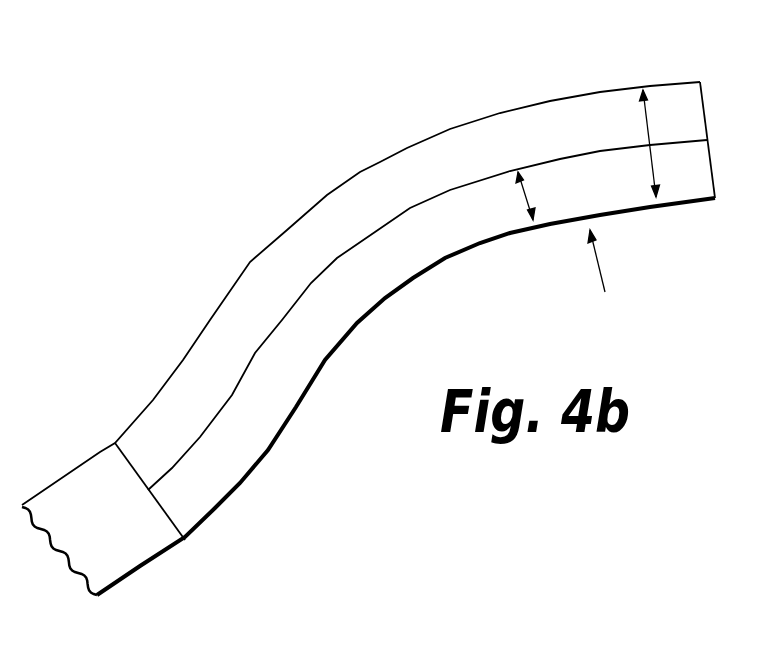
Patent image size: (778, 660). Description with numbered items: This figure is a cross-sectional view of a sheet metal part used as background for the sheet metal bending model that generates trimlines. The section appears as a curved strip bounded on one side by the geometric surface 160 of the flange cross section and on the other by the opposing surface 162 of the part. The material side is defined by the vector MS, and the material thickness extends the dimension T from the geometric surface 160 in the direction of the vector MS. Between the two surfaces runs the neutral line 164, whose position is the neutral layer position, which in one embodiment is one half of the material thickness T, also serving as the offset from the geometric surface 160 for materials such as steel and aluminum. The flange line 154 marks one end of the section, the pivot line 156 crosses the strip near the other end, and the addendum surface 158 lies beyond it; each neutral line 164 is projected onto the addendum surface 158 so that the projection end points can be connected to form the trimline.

The flange line 154 is at (708, 110).
The pivot line 156 is at (172, 512).
The addendum surface 158 is at (93, 483).
The geometric surface 160 is at (242, 483).
The opposing surface 162 is at (183, 357).
The neutral line 164 is at (172, 468).
The material thickness T is at (638, 118).
The material side vector MS is at (600, 265).